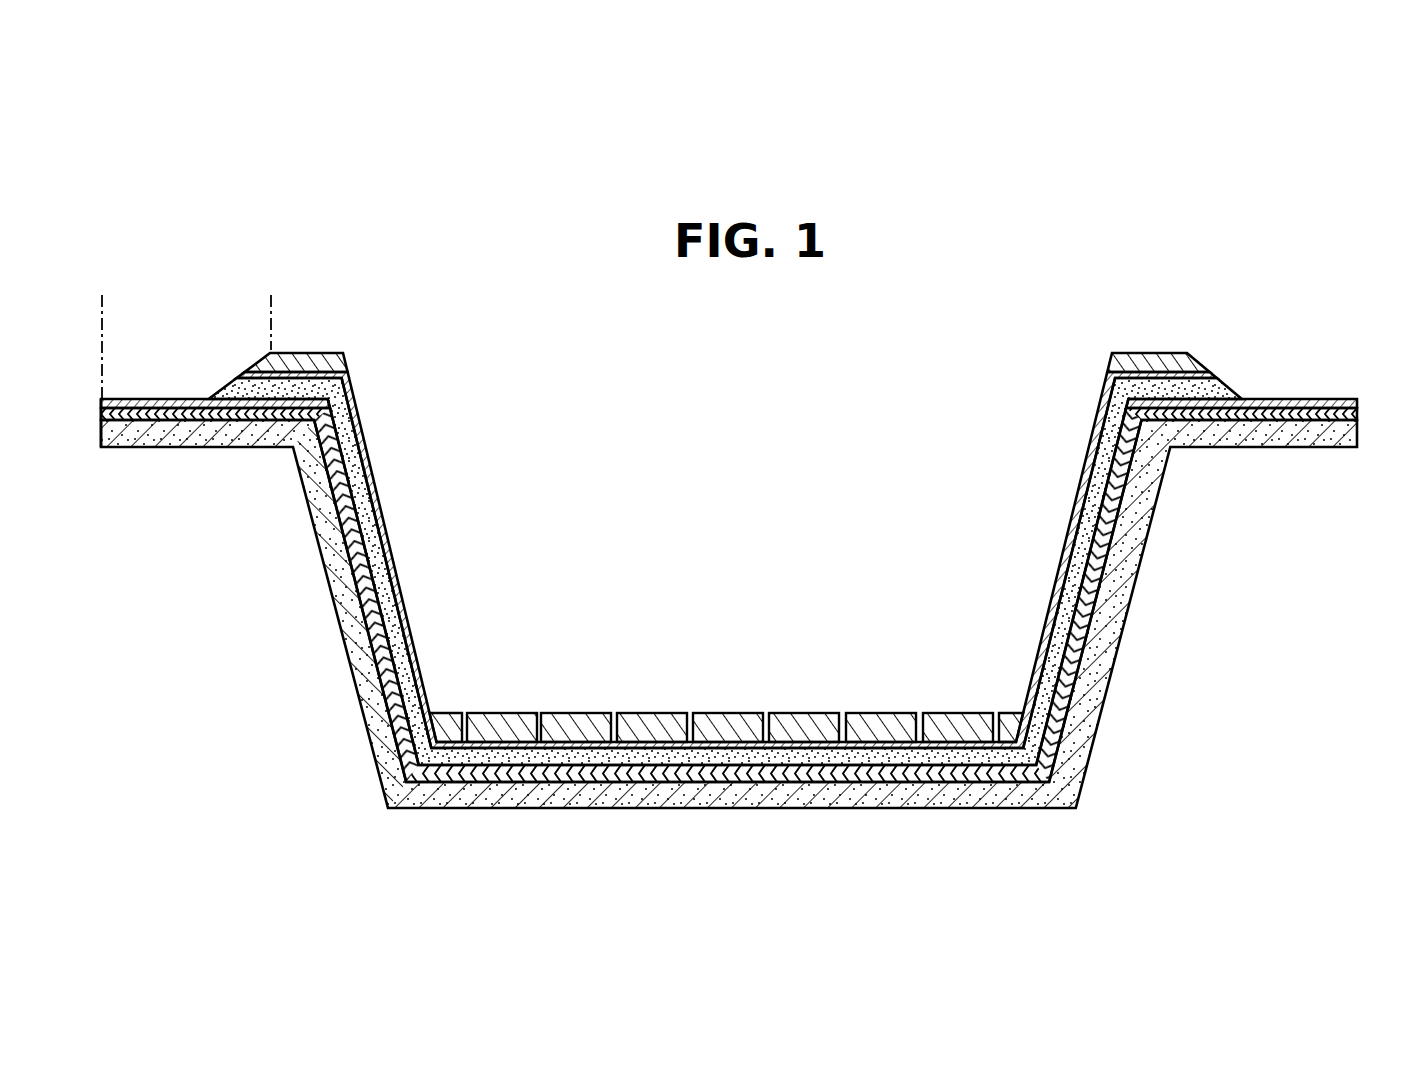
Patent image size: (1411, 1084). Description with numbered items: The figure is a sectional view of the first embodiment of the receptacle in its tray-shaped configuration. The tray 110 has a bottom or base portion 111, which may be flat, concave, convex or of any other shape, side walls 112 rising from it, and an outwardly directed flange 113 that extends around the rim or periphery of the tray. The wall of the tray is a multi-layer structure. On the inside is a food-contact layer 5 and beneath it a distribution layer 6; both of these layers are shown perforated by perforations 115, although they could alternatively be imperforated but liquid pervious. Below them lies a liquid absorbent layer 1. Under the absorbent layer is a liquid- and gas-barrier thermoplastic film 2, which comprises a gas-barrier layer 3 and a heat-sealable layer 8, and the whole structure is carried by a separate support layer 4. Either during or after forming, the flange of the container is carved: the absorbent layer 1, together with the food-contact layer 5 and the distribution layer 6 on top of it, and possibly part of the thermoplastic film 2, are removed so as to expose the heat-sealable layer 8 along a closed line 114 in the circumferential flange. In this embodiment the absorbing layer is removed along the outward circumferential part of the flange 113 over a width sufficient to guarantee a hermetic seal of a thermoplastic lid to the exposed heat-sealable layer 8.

The liquid absorbent layer 1 is at (1220, 388).
The liquid- and gas-barrier thermoplastic film 2 is at (1362, 400).
The gas-barrier layer 3 is at (1333, 422).
The support layer 4 is at (1288, 438).
The food-contact layer 5 is at (1158, 361).
The distribution layer 6 is at (1212, 375).
The heat-sealable layer 8 is at (1302, 400).
The tray 110 is at (715, 551).
The bottom or base portion 111 is at (723, 750).
The side walls 112 is at (313, 507).
The outwardly directed flange 113 is at (100, 408).
The closed line 114 is at (258, 322).
The perforations 115 is at (466, 712).